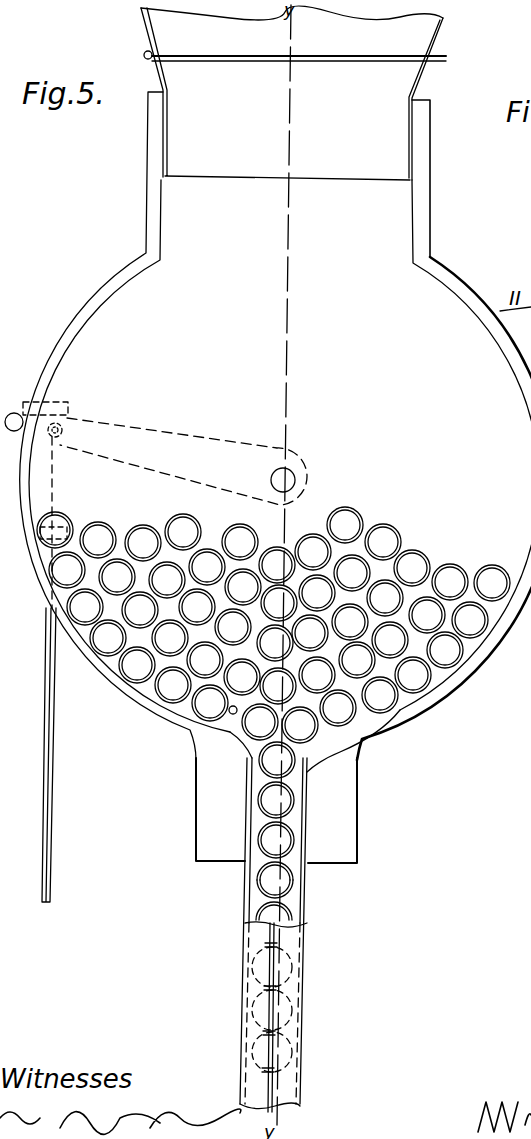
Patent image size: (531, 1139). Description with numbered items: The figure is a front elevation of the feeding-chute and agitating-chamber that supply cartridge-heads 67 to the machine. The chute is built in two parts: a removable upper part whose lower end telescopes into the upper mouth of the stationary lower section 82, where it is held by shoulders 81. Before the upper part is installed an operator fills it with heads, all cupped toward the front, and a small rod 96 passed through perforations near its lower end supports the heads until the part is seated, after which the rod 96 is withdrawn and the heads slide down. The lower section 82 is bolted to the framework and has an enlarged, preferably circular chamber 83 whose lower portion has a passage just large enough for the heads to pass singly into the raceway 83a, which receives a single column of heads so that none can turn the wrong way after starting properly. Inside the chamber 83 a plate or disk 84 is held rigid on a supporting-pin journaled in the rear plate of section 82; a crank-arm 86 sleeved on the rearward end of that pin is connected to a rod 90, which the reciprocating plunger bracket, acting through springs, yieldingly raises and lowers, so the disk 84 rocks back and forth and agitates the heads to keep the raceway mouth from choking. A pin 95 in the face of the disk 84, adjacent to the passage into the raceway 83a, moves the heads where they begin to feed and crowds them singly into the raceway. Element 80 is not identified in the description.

The transverse rod 80 is at (420, 38).
The shoulders 81 is at (165, 176).
The lower section 82 is at (358, 783).
The enlarged chamber 83 is at (450, 300).
The raceway 83a is at (307, 898).
The plate or disk 84 is at (329, 565).
The crank-arm 86 is at (12, 414).
The rod 90 is at (45, 708).
The pin 95 is at (232, 714).
The small rod 96 is at (131, 49).
The cartridge-head 67 is at (418, 562).